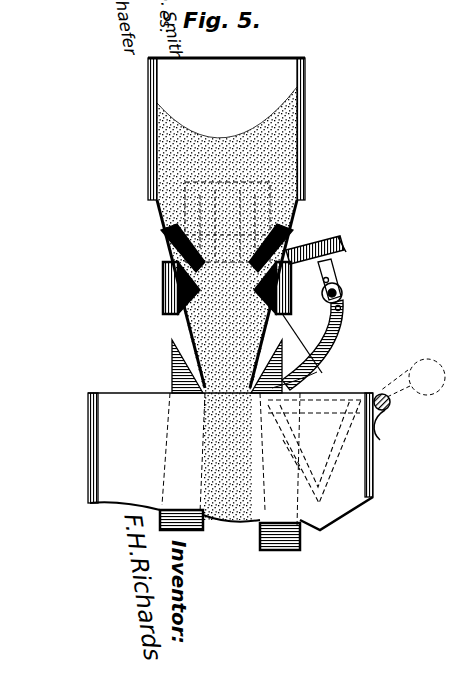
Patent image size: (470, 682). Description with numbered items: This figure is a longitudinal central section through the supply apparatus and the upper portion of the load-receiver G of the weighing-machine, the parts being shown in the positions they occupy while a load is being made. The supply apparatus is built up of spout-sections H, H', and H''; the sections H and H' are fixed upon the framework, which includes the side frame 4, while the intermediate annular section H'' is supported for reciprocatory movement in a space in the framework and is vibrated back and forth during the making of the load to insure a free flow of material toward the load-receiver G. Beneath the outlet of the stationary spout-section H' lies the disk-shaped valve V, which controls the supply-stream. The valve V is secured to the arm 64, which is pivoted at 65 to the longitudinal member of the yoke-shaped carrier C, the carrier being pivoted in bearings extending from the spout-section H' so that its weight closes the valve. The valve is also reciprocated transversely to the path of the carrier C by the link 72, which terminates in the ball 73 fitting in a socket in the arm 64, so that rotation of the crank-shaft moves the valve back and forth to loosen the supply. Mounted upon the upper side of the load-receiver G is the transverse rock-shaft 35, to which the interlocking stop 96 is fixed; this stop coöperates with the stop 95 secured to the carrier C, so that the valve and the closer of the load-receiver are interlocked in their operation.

The spout-section H is at (226, 289).
The spout-section H' is at (207, 289).
The spout-section H'' is at (205, 248).
The side frame 4 is at (172, 365).
The load-receiver G is at (230, 471).
The valve V is at (315, 451).
The interlocking stop 96 is at (288, 477).
The transverse rock-shaft 35 is at (385, 408).
The carrier C is at (298, 250).
The pivot 65 is at (343, 244).
The arm 64 is at (339, 263).
The ball 73 is at (342, 290).
The link 72 is at (342, 306).
The interlocking stop 95 is at (318, 372).